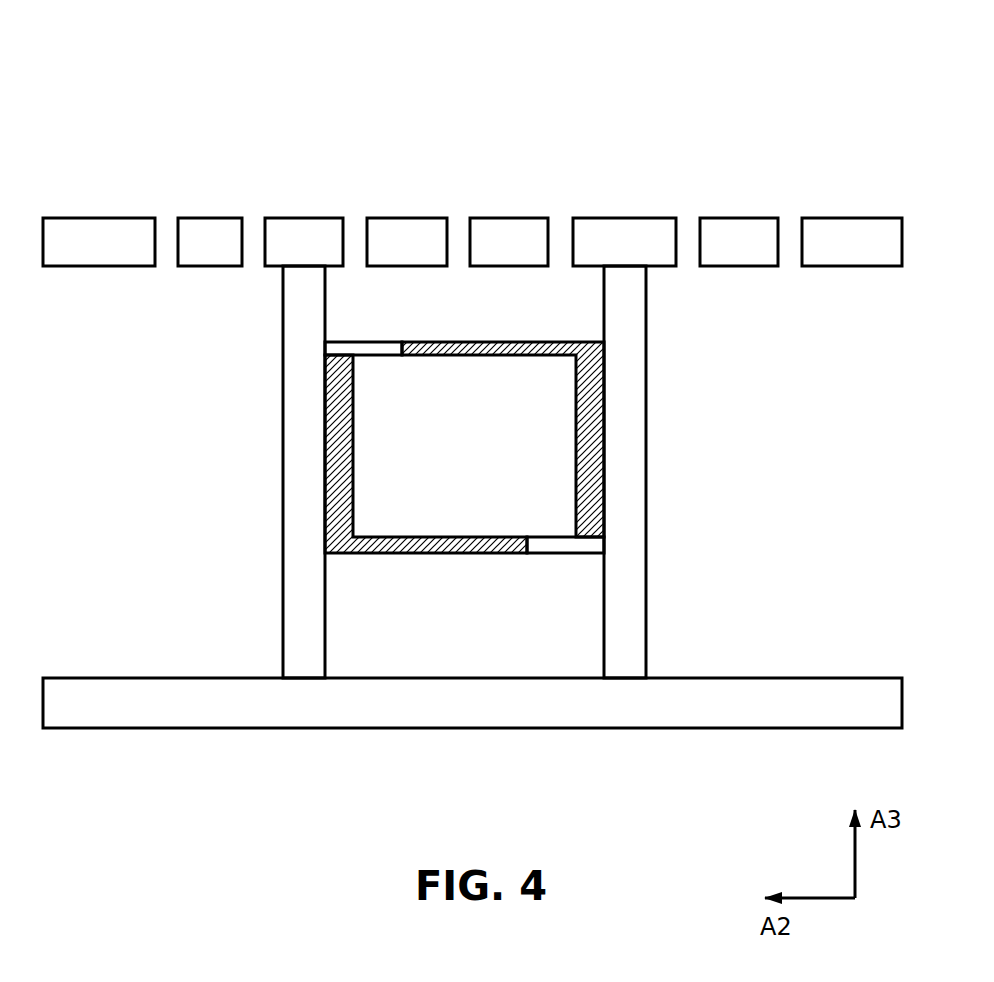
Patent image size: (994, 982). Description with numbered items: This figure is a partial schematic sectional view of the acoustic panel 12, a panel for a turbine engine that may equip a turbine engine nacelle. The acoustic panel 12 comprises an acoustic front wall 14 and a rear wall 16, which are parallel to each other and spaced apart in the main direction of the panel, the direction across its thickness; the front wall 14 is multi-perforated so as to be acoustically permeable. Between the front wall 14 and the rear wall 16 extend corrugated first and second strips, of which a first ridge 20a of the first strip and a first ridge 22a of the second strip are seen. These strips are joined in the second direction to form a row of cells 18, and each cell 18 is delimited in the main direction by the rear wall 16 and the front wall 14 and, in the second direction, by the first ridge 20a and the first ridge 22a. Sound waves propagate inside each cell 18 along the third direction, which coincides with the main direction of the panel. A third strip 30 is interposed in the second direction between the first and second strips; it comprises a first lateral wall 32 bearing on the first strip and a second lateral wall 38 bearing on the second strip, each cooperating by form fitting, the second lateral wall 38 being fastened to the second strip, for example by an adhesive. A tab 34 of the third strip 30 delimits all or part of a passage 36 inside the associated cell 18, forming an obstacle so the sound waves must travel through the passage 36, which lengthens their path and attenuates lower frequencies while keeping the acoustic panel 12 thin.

The acoustic panel 12 is at (758, 108).
The acoustic front wall 14 is at (93, 235).
The rear wall 16 is at (92, 712).
The cell 18 is at (490, 295).
The first ridge of the first strip 20a is at (648, 552).
The first ridge of the second strip 22a is at (283, 413).
The third strip 30 is at (407, 572).
The first lateral wall 32 is at (590, 465).
The tab 34 is at (477, 355).
The passage 36 is at (365, 342).
The second lateral wall 38 is at (340, 487).